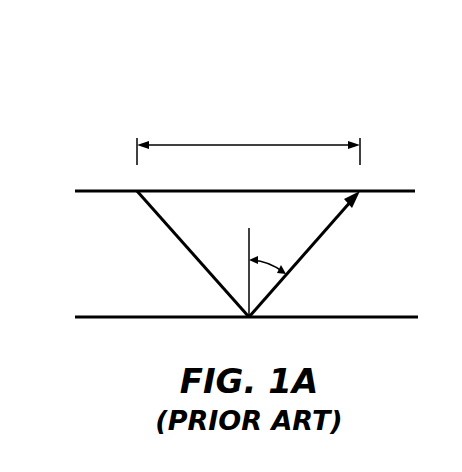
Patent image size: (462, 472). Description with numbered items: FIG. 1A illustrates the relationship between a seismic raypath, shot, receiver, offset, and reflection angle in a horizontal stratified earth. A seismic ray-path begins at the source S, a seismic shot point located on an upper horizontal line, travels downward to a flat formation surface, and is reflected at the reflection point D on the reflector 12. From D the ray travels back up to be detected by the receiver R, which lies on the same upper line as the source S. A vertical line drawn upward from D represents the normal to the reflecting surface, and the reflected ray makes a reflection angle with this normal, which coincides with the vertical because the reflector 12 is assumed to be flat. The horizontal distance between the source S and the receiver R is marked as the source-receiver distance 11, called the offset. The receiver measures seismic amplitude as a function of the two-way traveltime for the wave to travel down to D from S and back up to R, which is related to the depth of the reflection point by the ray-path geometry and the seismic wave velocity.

The source-receiver distance 11 is at (275, 145).
The reflector 12 is at (365, 317).
The source S is at (189, 242).
The receiver R is at (308, 242).
The reflection point D is at (249, 287).